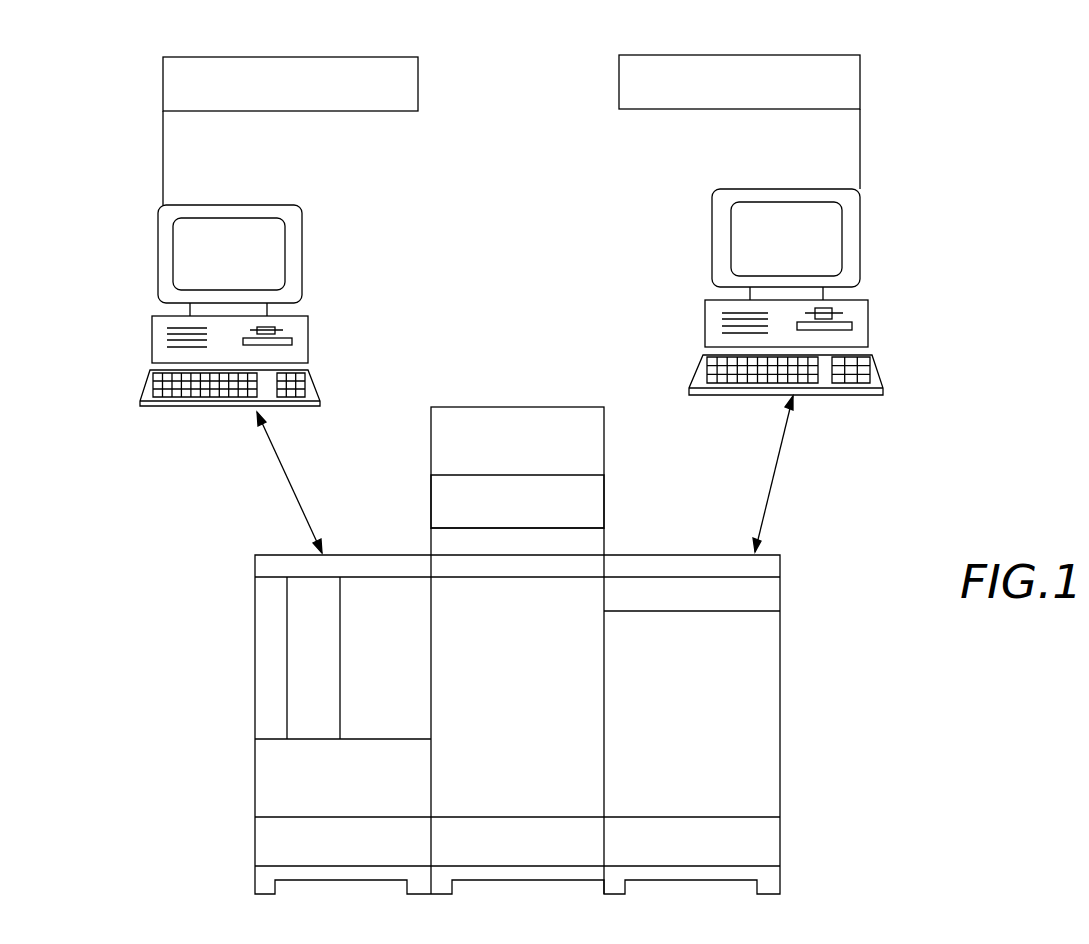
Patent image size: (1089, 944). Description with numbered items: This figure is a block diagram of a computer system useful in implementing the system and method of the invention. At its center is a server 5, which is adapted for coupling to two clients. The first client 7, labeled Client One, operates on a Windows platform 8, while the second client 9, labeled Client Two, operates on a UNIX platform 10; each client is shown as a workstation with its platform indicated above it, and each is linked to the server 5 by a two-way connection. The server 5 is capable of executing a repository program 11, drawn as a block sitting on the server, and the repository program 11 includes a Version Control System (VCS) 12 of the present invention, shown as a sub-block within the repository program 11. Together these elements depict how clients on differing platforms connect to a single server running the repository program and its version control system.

The server 5 is at (782, 662).
The first client 7 is at (297, 245).
The Windows platform 8 is at (340, 111).
The second client 9 is at (862, 230).
The UNIX platform 10 is at (860, 93).
The repository program 11 is at (605, 435).
The Version Control System (VCS) 12 is at (605, 502).